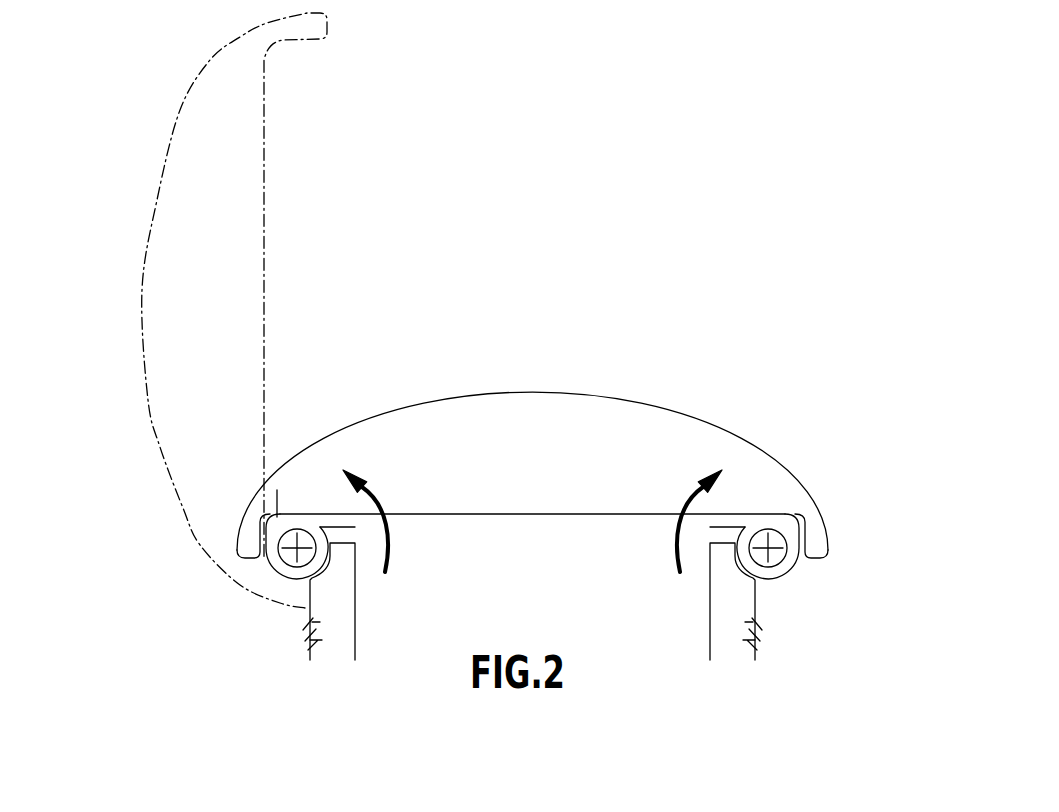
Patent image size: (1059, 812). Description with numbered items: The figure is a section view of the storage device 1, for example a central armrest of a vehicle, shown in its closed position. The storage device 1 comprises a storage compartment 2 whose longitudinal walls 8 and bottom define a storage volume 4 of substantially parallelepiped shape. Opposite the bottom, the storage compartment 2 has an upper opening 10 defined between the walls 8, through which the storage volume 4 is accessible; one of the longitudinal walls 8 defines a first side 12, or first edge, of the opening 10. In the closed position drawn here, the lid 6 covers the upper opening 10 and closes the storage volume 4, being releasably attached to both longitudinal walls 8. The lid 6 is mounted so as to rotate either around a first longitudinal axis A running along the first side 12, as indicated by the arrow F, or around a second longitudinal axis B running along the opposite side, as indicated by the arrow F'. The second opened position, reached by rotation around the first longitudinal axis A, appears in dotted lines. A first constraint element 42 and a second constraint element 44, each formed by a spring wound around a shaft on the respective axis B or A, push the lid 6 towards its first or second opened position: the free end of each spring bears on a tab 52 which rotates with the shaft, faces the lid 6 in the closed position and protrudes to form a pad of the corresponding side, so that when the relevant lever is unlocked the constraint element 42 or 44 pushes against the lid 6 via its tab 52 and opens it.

The storage device 1 is at (633, 310).
The storage compartment 2 is at (300, 622).
The storage volume 4 is at (676, 611).
The lid 6 is at (190, 170).
The longitudinal wall 8 is at (300, 643).
The upper opening 10 is at (518, 538).
The first side 12 is at (343, 540).
The first constraint element 42 is at (743, 514).
The second constraint element 44 is at (322, 514).
The tab 52 is at (355, 527).
The first longitudinal axis A is at (283, 562).
The second longitudinal axis B is at (775, 556).
The arrow F is at (383, 510).
The arrow F' is at (682, 510).